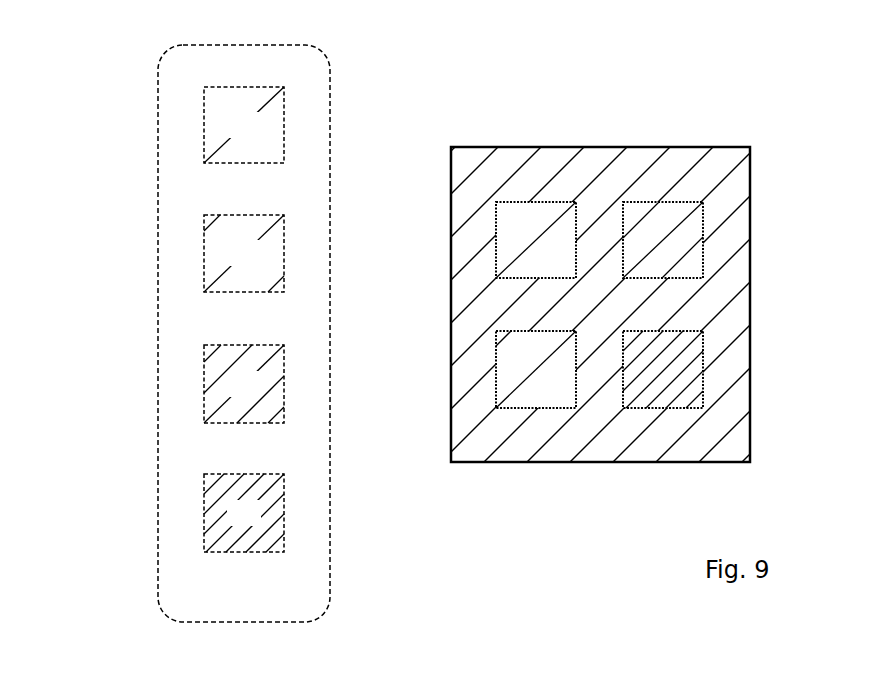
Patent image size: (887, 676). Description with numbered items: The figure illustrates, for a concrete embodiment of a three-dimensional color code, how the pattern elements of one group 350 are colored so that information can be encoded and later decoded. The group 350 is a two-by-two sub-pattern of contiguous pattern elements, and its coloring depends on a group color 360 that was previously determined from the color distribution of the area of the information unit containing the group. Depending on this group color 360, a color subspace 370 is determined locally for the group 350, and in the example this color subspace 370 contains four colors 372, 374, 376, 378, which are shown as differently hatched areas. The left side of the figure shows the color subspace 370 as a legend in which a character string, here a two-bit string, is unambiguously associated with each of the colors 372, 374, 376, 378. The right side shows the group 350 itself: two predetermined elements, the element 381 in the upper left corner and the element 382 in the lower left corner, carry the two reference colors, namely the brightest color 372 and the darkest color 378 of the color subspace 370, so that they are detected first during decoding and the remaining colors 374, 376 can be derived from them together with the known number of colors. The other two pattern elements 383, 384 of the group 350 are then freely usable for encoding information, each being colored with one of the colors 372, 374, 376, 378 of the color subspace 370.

The group 350 is at (612, 135).
The group color 360 is at (716, 300).
The color subspace 370 is at (127, 175).
The first reference color 372 is at (284, 126).
The color 374 is at (204, 257).
The color 376 is at (204, 385).
The second reference color 378 is at (204, 523).
The upper-left element 381 is at (495, 245).
The lower-left element 382 is at (703, 386).
The pattern element 383 is at (522, 409).
The pattern element 384 is at (703, 253).